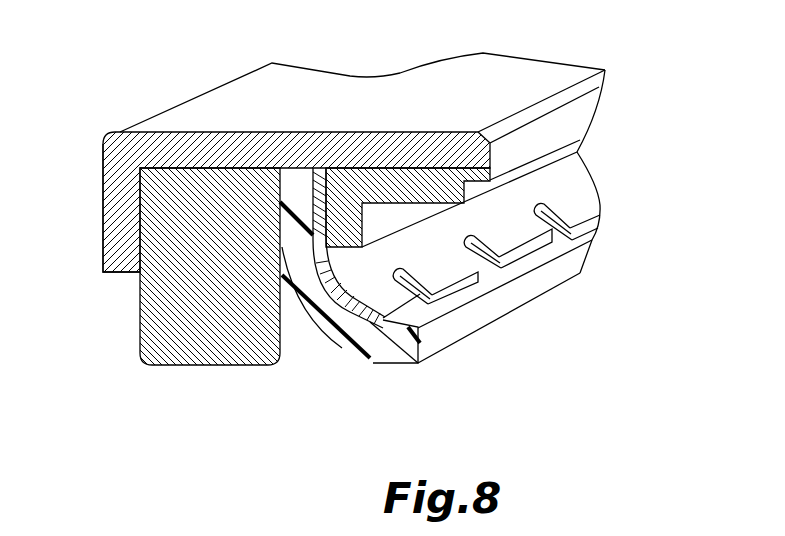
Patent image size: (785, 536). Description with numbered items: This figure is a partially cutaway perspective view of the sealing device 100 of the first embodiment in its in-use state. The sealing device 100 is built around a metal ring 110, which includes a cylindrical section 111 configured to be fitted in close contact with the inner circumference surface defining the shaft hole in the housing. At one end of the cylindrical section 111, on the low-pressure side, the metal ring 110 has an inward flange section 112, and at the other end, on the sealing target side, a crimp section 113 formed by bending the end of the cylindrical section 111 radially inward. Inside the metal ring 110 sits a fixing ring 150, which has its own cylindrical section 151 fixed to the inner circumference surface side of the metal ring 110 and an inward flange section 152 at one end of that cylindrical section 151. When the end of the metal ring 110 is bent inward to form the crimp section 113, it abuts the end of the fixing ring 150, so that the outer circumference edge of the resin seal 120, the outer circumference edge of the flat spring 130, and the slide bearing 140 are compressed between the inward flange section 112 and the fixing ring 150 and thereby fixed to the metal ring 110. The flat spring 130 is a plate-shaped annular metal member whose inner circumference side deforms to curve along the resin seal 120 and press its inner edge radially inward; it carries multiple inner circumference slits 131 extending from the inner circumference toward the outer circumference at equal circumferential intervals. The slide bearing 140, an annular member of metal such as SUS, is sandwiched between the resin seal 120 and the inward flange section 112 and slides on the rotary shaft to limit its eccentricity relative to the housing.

The sealing device 100 is at (636, 93).
The metal ring 110 is at (179, 92).
The cylindrical section 111 is at (318, 165).
The inward flange section 112 is at (103, 235).
The crimp section 113 is at (577, 154).
The resin seal 120 is at (377, 355).
The flat spring 130 is at (584, 203).
The inner circumference slits 131 is at (560, 242).
The slide bearing 140 is at (197, 335).
The fixing ring 150 is at (394, 218).
The cylindrical section 151 is at (410, 185).
The inward flange section 152 is at (352, 337).